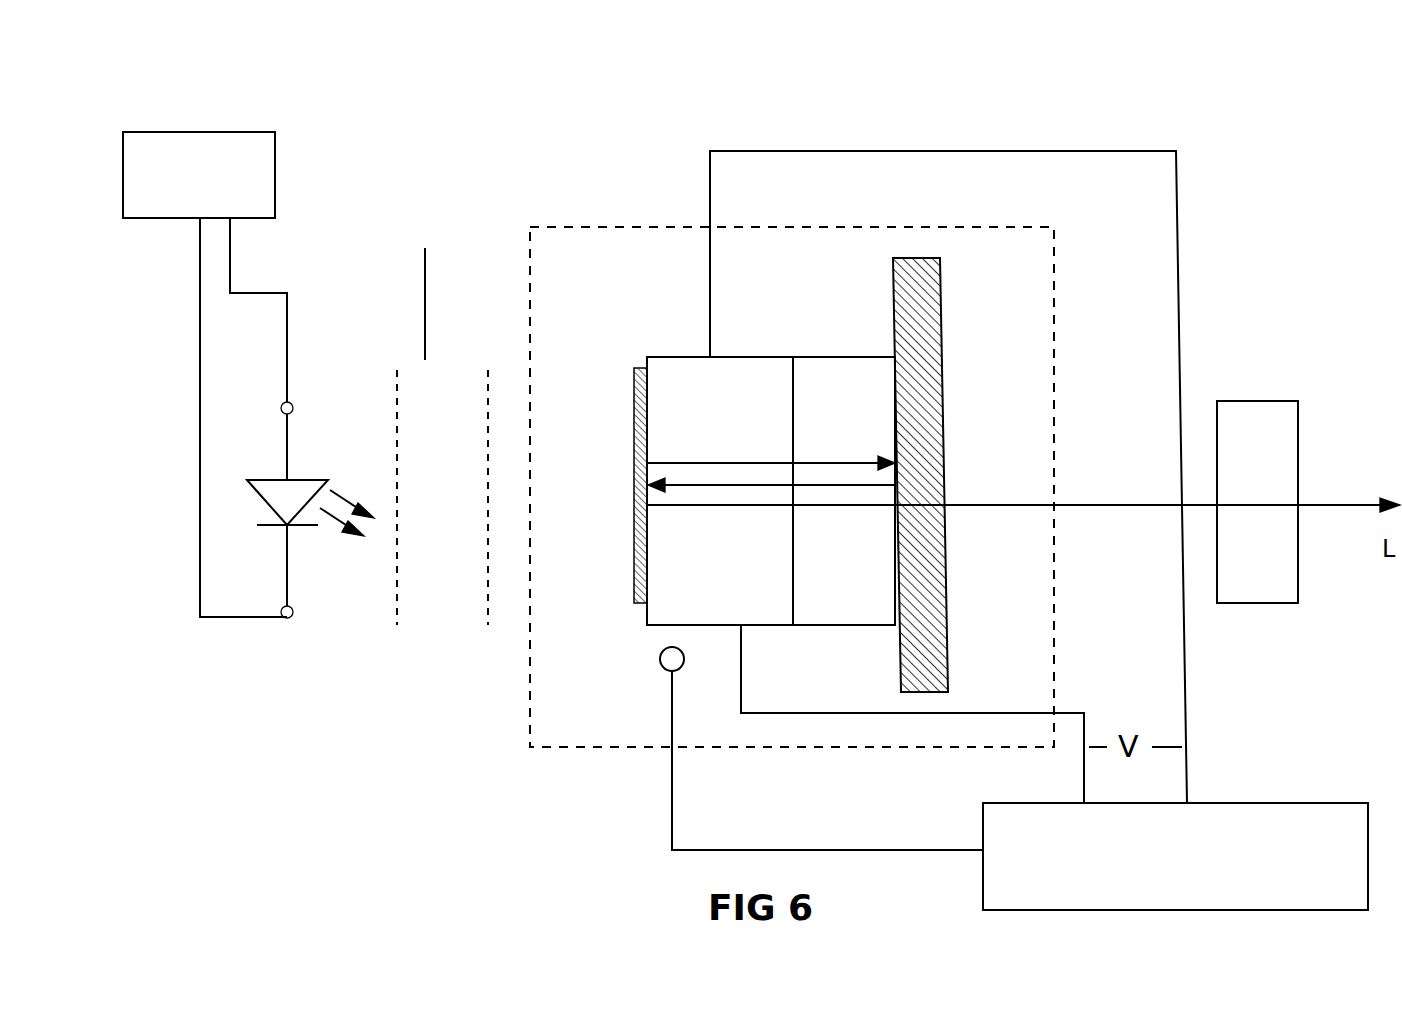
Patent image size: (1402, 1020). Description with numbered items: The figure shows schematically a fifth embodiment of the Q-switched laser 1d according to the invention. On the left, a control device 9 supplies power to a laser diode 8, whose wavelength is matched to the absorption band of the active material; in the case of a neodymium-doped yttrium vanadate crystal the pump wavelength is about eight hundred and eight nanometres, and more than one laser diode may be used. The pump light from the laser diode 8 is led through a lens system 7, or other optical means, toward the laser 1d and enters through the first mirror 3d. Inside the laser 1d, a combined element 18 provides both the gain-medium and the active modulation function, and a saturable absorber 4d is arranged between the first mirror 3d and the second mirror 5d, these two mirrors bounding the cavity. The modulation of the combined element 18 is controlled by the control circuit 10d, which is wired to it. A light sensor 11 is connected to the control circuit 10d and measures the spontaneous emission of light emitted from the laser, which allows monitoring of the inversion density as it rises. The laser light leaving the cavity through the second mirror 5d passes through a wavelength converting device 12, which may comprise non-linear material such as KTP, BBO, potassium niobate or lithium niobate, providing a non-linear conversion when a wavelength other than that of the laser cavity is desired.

The control device 9 is at (180, 131).
The laser diode 8 is at (305, 540).
The lens system 7 is at (442, 414).
The laser 1d is at (528, 292).
The combined element 18 is at (677, 357).
The saturable absorber 4d is at (850, 357).
The first mirror 3d is at (633, 545).
The second mirror 5d is at (942, 365).
The light sensor 11 is at (821, 748).
The wavelength converting device 12 is at (1262, 400).
The control circuit 10d is at (1243, 803).